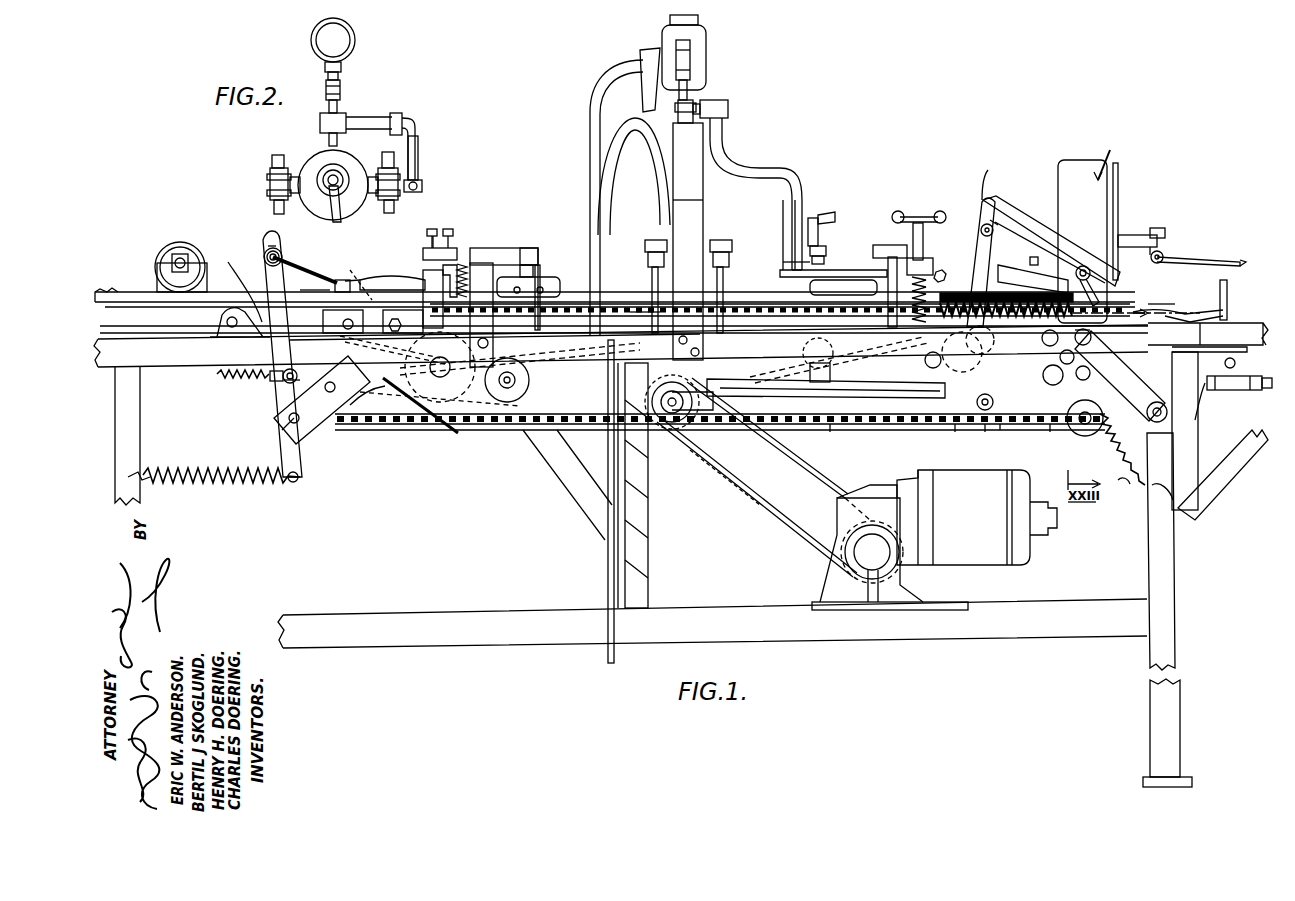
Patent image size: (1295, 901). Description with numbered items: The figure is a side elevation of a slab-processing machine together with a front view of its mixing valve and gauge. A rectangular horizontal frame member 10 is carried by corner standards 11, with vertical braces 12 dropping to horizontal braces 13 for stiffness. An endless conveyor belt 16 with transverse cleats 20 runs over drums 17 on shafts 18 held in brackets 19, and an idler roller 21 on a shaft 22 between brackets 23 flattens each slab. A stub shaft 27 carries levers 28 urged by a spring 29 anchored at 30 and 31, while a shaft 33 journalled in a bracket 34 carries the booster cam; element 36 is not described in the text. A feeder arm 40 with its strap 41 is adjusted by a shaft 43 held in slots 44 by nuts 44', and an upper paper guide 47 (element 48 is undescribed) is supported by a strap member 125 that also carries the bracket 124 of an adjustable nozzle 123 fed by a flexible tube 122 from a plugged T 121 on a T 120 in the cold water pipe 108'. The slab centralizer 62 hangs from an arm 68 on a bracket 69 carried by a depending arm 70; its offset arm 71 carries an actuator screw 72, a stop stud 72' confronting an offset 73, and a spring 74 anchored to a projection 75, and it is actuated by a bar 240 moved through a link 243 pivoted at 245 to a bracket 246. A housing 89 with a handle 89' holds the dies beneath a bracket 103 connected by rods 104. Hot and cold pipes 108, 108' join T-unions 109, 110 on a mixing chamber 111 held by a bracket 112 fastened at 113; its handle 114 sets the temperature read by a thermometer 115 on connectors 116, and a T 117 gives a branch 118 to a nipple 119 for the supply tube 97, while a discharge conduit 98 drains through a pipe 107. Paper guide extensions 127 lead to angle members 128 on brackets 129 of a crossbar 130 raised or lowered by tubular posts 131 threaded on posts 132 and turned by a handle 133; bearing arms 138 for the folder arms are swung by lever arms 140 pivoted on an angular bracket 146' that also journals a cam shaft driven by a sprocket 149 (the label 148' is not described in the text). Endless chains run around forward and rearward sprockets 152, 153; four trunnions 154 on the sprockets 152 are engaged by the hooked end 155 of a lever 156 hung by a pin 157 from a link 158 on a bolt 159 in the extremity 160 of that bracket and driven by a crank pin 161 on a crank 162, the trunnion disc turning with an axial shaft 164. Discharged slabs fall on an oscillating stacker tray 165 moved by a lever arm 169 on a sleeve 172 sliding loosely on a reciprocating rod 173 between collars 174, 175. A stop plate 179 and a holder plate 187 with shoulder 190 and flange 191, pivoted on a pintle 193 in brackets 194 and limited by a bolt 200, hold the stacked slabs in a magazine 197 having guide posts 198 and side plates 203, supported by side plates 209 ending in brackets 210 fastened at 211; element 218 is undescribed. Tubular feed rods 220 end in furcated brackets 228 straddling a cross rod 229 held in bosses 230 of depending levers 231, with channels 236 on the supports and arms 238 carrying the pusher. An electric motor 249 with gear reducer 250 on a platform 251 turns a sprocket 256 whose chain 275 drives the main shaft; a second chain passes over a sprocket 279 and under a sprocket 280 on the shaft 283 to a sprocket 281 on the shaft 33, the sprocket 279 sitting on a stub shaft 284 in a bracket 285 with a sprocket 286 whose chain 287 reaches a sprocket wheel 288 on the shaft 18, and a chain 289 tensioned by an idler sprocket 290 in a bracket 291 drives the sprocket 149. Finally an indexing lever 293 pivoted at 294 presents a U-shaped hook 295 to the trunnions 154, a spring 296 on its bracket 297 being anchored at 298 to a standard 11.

In FIG. 1, the frame beam 10 is at (178, 368).
In FIG. 1, the frame post 11 is at (128, 440).
In FIG. 1, the upright column 12 is at (653, 570).
In FIG. 1, the lower frame beam 13 is at (490, 648).
In FIG. 1, the upper rail 16 is at (140, 294).
In FIG. 1, the guide block 17 is at (323, 318).
In FIG. 1, the pivot pin 18 is at (343, 320).
In FIG. 1, the beam 19 is at (330, 349).
In FIG. 1, the rail end 20 is at (98, 291).
In FIG. 1, the roller 21 is at (180, 242).
In FIG. 1, the roller slot 22 is at (160, 250).
In FIG. 1, the roller bracket 23 is at (160, 285).
In FIG. 1, the lever 27 is at (290, 426).
In FIG. 1, the vertical bar 28 is at (271, 281).
In FIG. 1, the spring 29 is at (203, 470).
In FIG. 1, the spring anchor 30 is at (295, 475).
In FIG. 1, the spring hook 31 is at (140, 480).
In FIG. 1, the rocker plate 33 is at (328, 390).
In FIG. 1, the lever arm 34 is at (308, 432).
In FIG. 1, the spring 36 is at (236, 376).
In FIG. 1, the link 40 is at (336, 278).
In FIG. 1, the link pin 41 is at (302, 288).
In FIG. 1, the pivot bushing 43 is at (265, 260).
In FIG. 1, the pivot pin 44 is at (255, 251).
In FIG. 1, the pin head 44' is at (254, 234).
In FIG. 1, the bar 47 is at (390, 279).
In FIG. 1, the bar end 48 is at (362, 276).
In FIG. 1, the shoe 62 is at (553, 279).
In FIG. 1, the shoe stem 68 is at (535, 268).
In FIG. 1, the block 69 is at (520, 247).
In FIG. 1, the head block 70 is at (495, 250).
In FIG. 1, the bolt 71 is at (438, 238).
In FIG. 1, the bolt 72 is at (450, 226).
In FIG. 1, the bolt 72' is at (464, 233).
In FIG. 1, the bracket 73 is at (452, 290).
In FIG. 1, the slide bar 74 is at (490, 290).
In FIG. 1, the spring 75 is at (465, 262).
In FIG. 1, the valve rod 89 is at (704, 286).
In FIG. 1, the rod 89' is at (584, 280).
In FIG. 1, the hose 97 is at (610, 72).
In FIG. 1, the hose 98 is at (590, 170).
In FIG. 1, the cylinder 103 is at (703, 238).
In FIG. 1, the nut 104 is at (668, 246).
In FIG. 1, the rod 107 is at (608, 586).
In FIG. 2, the fitting 108 is at (256, 186).
In FIG. 2, the fitting 108' is at (427, 182).
In FIG. 1, the fitting 108' is at (715, 85).
In FIG. 2, the valve 109 is at (268, 190).
In FIG. 2, the valve 110 is at (398, 172).
In FIG. 1, the valve 110 is at (690, 62).
In FIG. 2, the regulator body 111 is at (318, 166).
In FIG. 1, the regulator body 111 is at (700, 36).
In FIG. 1, the cylinder wall 112 is at (704, 208).
In FIG. 1, the bolts 113 is at (678, 342).
In FIG. 2, the handle 114 is at (333, 222).
In FIG. 1, the handle 114 is at (642, 102).
In FIG. 2, the gauge 115 is at (345, 52).
In FIG. 2, the fitting 116 is at (342, 92).
In FIG. 2, the tee 117 is at (334, 123).
In FIG. 2, the pipe 118 is at (420, 146).
In FIG. 2, the elbow 119 is at (424, 184).
In FIG. 1, the fitting 120 is at (676, 115).
In FIG. 1, the elbow 121 is at (728, 104).
In FIG. 1, the pipe 122 is at (723, 135).
In FIG. 1, the valve 123 is at (818, 214).
In FIG. 1, the pipe 124 is at (790, 265).
In FIG. 1, the bracket 125 is at (770, 340).
In FIG. 1, the plate 127 is at (836, 278).
In FIG. 1, the plate 128 is at (865, 270).
In FIG. 1, the nut 129 is at (940, 270).
In FIG. 1, the spring 130 is at (935, 258).
In FIG. 1, the stem 131 is at (916, 222).
In FIG. 1, the link 132 is at (915, 341).
In FIG. 1, the handle 133 is at (921, 212).
In FIG. 1, the block 138 is at (878, 244).
In FIG. 1, the bar 140 is at (890, 255).
In FIG. 1, the rail 146' is at (826, 395).
In FIG. 1, the rail 148' is at (834, 400).
In FIG. 1, the gear 149 is at (975, 334).
In FIG. 1, the sprocket 152 is at (1070, 426).
In FIG. 1, the chain 153 is at (425, 430).
In FIG. 1, the rollers 154 is at (1040, 348).
In FIG. 1, the chain guide 155 is at (1048, 432).
In FIG. 1, the chain guide 156 is at (830, 426).
In FIG. 1, the chain guide 157 is at (955, 428).
In FIG. 1, the chain guide 158 is at (985, 426).
In FIG. 1, the chain guide 159 is at (1001, 430).
In FIG. 1, the pin 160 is at (935, 350).
In FIG. 1, the shaft 161 is at (661, 402).
In FIG. 1, the sprocket 162 is at (650, 386).
In FIG. 1, the cam 164 is at (1074, 340).
In FIG. 1, the bracket 165 is at (1225, 290).
In FIG. 1, the beam end 169 is at (1258, 356).
In FIG. 1, the cylinder 172 is at (1232, 390).
In FIG. 1, the belt 173 is at (748, 428).
In FIG. 1, the hole 174 is at (1268, 366).
In FIG. 1, the lever 175 is at (1136, 376).
In FIG. 1, the bracket 179 is at (1224, 280).
In FIG. 1, the pin 187 is at (1170, 255).
In FIG. 1, the rod 190 is at (1200, 260).
In FIG. 1, the rod end 191 is at (1242, 258).
In FIG. 1, the pivot 193 is at (1163, 252).
In FIG. 1, the block 194 is at (1165, 232).
In FIG. 1, the direction arrow 197 is at (1117, 149).
In FIG. 1, the strip 198 is at (1120, 162).
In FIG. 1, the bar 200 is at (1155, 232).
In FIG. 1, the plate 203 is at (1094, 165).
In FIG. 1, the pivot 209 is at (1084, 265).
In FIG. 1, the section line 210 is at (1122, 300).
In FIG. 1, the brush 211 is at (1070, 323).
In FIG. 1, the bracket 218 is at (1112, 270).
In FIG. 1, the arm 220 is at (1025, 220).
In FIG. 1, the pivot 228 is at (988, 224).
In FIG. 1, the arm end 229 is at (989, 218).
In FIG. 1, the arm 230 is at (968, 240).
In FIG. 1, the arm top 231 is at (976, 165).
In FIG. 1, the plate 236 is at (1075, 237).
In FIG. 1, the arm edge 238 is at (1042, 234).
In FIG. 1, the block 240 is at (430, 270).
In FIG. 1, the link 243 is at (228, 262).
In FIG. 1, the bracket 245 is at (214, 326).
In FIG. 1, the bracket base 246 is at (230, 337).
In FIG. 1, the motor 249 is at (1028, 540).
In FIG. 1, the gear reducer 250 is at (912, 565).
In FIG. 1, the base plate 251 is at (965, 610).
In FIG. 1, the pulley 256 is at (845, 542).
In FIG. 1, the belt 275 is at (772, 520).
In FIG. 1, the wheel 279 is at (530, 372).
In FIG. 1, the pulley 280 is at (440, 378).
In FIG. 1, the belt 281 is at (355, 406).
In FIG. 1, the block 283 is at (418, 333).
In FIG. 1, the chain 284 is at (505, 426).
In FIG. 1, the brace 285 is at (570, 484).
In FIG. 1, the rod 286 is at (540, 354).
In FIG. 1, the rod 287 is at (345, 345).
In FIG. 1, the rod 288 is at (350, 270).
In FIG. 1, the plate 289 is at (800, 333).
In FIG. 1, the chain 290 is at (835, 316).
In FIG. 1, the chain 291 is at (798, 425).
In FIG. 1, the bracket 293 is at (1198, 430).
In FIG. 1, the arm 294 is at (1188, 440).
In FIG. 1, the beam 295 is at (1208, 334).
In FIG. 1, the spring end 296 is at (1135, 486).
In FIG. 1, the spring 297 is at (1105, 428).
In FIG. 1, the post bracket 298 is at (1160, 488).